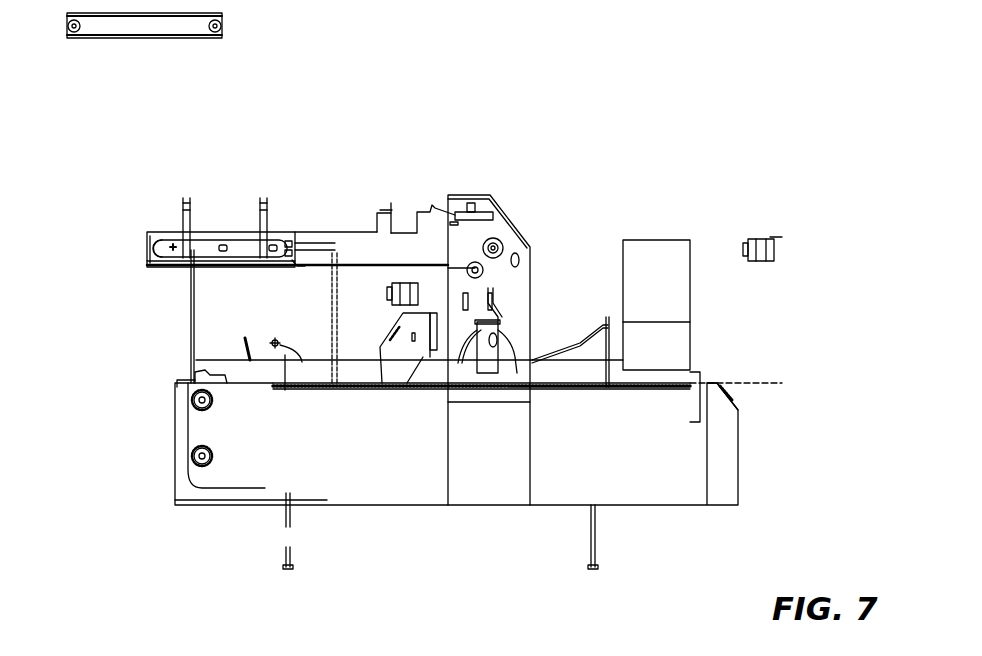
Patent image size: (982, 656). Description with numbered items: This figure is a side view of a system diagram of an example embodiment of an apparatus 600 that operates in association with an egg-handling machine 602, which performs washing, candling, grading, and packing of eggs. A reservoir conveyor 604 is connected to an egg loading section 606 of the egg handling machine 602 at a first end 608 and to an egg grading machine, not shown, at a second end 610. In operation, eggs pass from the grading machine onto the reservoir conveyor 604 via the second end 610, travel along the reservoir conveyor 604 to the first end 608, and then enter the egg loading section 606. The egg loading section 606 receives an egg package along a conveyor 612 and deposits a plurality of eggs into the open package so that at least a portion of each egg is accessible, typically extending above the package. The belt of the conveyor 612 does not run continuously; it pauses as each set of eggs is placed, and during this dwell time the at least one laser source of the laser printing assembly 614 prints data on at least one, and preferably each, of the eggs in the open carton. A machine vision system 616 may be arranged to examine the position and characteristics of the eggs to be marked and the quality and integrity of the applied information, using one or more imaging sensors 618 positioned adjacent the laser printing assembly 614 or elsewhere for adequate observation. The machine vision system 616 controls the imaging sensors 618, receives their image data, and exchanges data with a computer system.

The apparatus 600 is at (406, 79).
The egg-handling machine 602 is at (693, 505).
The reservoir conveyor 604 is at (201, 240).
The egg loading section 606 is at (465, 193).
The first end 608 is at (290, 232).
The second end 610 is at (147, 232).
The conveyor 612 is at (568, 393).
The laser printing assembly 614 is at (407, 383).
The machine vision system 616 is at (730, 380).
The imaging sensor 618 is at (807, 209).